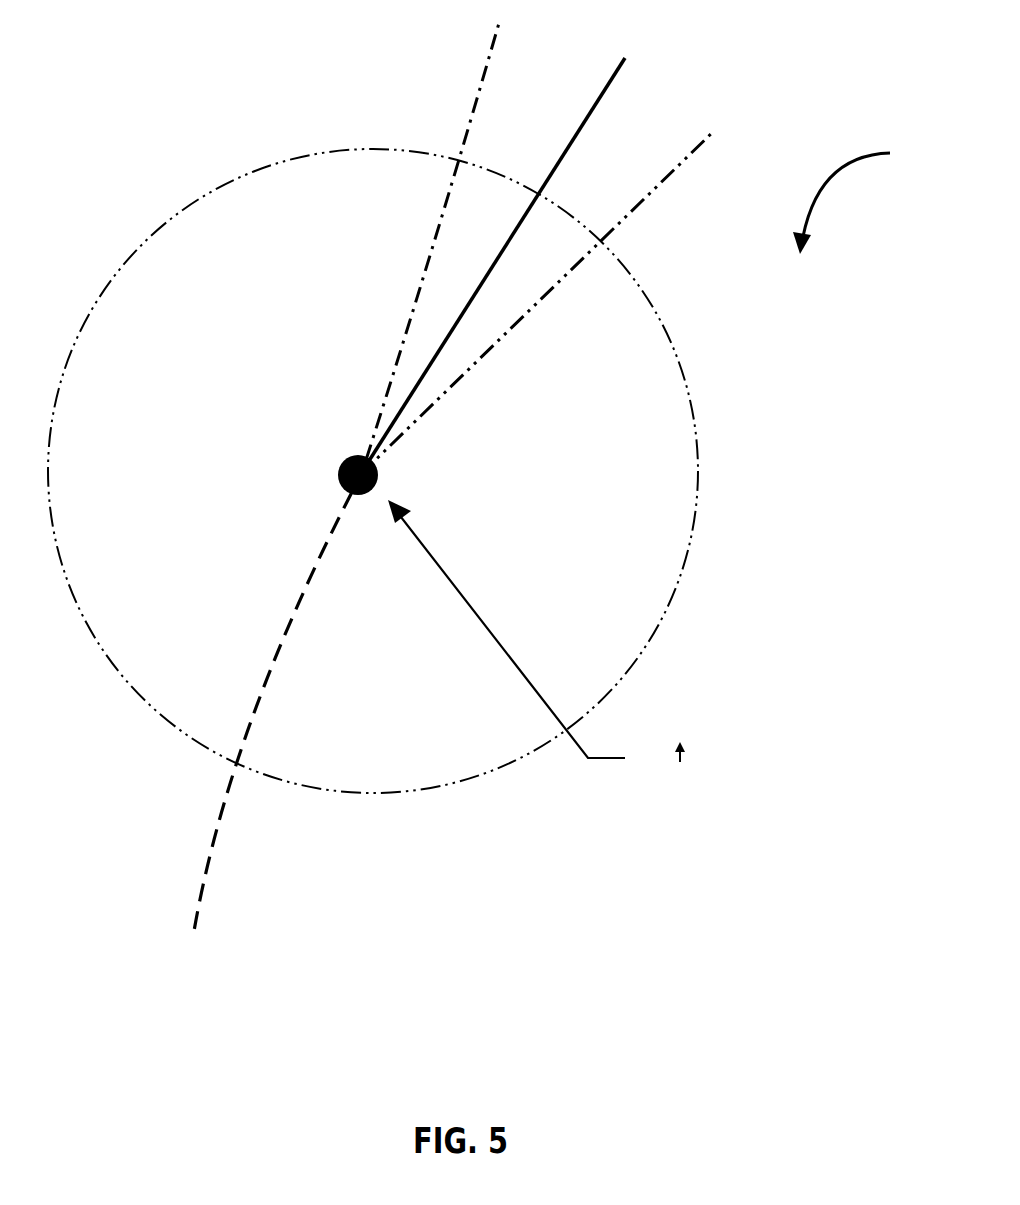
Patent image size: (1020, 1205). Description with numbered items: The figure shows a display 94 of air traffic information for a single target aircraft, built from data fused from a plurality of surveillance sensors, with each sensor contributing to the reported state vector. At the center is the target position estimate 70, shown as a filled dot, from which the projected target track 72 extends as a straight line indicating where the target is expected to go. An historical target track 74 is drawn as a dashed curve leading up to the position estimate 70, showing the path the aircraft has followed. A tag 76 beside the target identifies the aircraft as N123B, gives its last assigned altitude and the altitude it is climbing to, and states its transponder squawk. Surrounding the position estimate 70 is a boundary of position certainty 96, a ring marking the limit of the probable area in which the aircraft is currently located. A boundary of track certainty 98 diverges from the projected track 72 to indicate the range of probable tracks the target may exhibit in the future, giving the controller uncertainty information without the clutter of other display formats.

The target position estimate 70 is at (344, 464).
The projected target track 72 is at (577, 137).
The historical target track 74 is at (279, 636).
The tag 76 is at (674, 708).
The display 94 is at (855, 200).
The boundary of position certainty 96 is at (698, 463).
The boundary of track certainty 98 is at (643, 200).